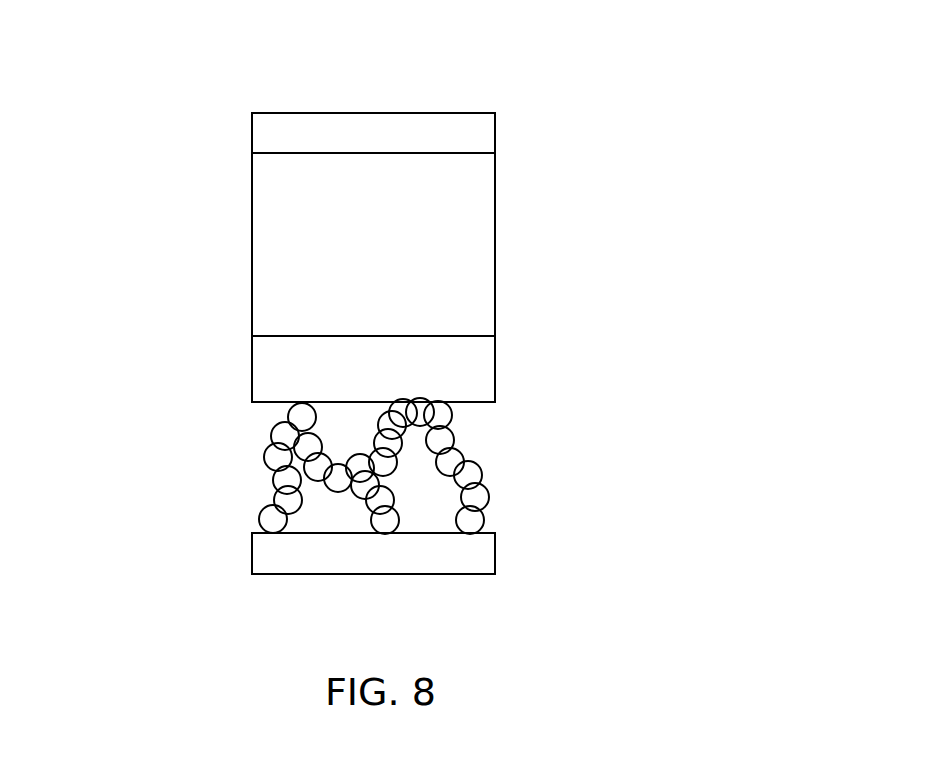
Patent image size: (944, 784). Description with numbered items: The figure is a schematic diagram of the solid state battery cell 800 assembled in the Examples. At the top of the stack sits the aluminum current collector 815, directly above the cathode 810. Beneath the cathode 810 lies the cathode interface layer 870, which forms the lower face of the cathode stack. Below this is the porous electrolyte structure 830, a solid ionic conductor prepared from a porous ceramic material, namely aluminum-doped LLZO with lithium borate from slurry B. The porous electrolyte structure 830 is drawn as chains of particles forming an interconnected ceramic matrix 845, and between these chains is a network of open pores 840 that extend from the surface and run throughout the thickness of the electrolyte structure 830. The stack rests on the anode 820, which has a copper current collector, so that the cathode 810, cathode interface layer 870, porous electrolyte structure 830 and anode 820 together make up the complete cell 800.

The solid state battery cell 800 is at (524, 76).
The aluminum current collector 815 is at (496, 123).
The cathode 810 is at (496, 178).
The cathode interface layer 870 is at (495, 353).
The porous electrolyte structure 830 is at (138, 470).
The interconnected ceramic matrix 845 is at (270, 480).
The open pores 840 is at (330, 503).
The anode 820 is at (432, 575).